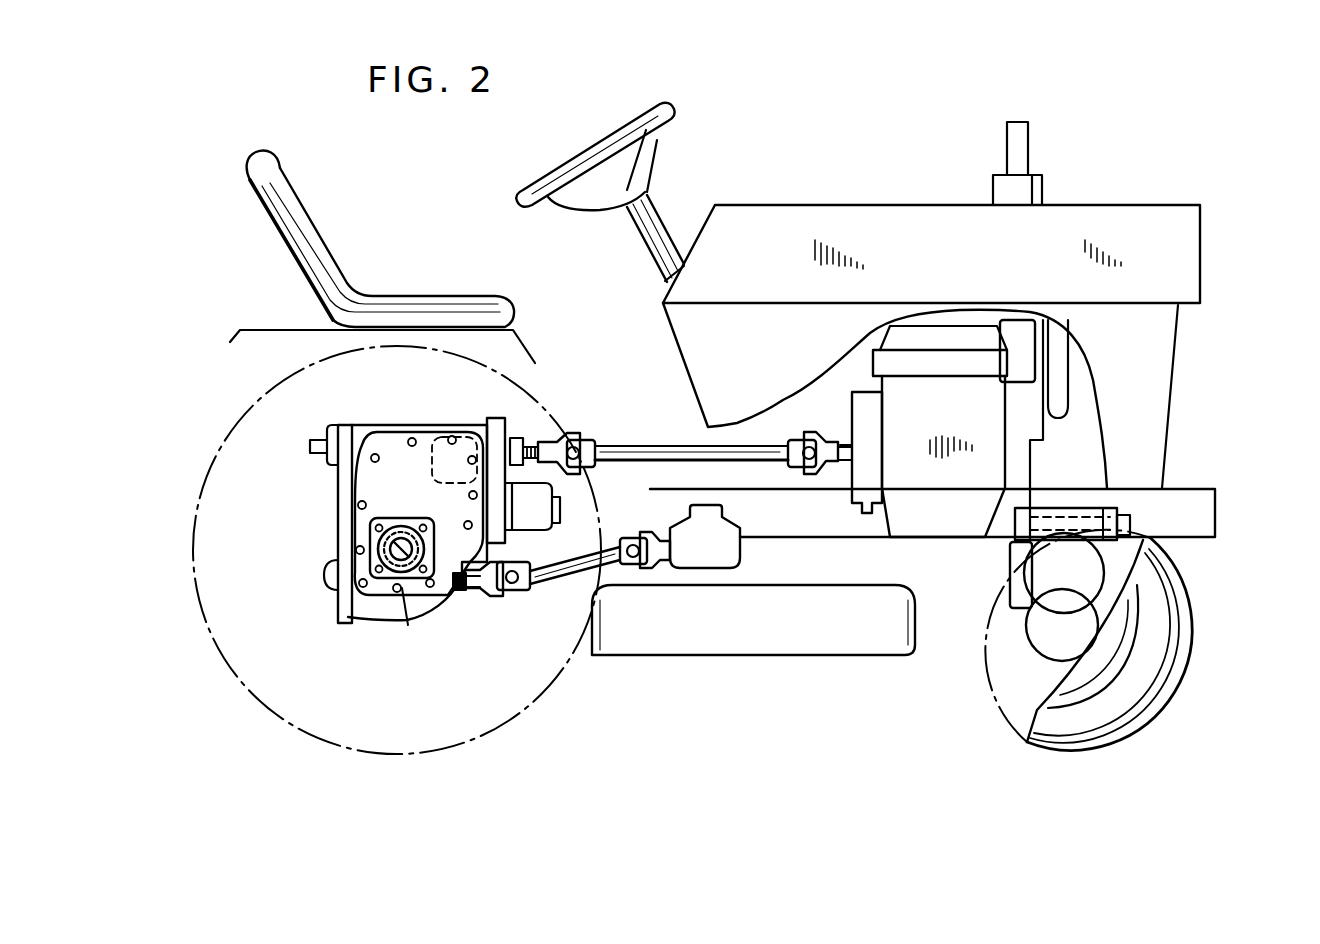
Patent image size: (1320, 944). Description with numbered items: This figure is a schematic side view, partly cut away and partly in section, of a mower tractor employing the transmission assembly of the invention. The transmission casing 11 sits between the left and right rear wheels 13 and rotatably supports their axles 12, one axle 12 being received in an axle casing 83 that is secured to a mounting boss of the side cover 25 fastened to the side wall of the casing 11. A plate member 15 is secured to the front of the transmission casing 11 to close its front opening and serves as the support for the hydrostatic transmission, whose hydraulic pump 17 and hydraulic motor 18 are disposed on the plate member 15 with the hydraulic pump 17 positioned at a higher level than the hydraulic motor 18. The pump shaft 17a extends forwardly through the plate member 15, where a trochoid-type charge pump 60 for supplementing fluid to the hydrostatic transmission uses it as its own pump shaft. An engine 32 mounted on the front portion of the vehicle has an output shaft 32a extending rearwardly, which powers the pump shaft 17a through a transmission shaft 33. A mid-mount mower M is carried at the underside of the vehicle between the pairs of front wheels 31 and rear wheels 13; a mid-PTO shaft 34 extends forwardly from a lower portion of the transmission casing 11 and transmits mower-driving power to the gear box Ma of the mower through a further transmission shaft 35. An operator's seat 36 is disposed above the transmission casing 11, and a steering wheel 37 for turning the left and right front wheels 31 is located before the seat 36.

The transmission casing 11 is at (368, 432).
The axle 12 is at (408, 625).
The rear wheel 13 is at (560, 672).
The plate member 15 is at (503, 418).
The hydraulic pump 17 is at (457, 413).
The pump shaft 17a is at (563, 430).
The hydraulic motor 18 is at (590, 478).
The side cover 25 is at (338, 488).
The front wheel 31 is at (1143, 690).
The engine 32 is at (963, 382).
The engine output shaft 32a is at (838, 430).
The transmission shaft 33 is at (740, 443).
The mid-PTO shaft 34 is at (460, 590).
The transmission shaft 35 is at (570, 568).
The operator's seat 36 is at (335, 280).
The steering wheel 37 is at (663, 103).
The charge pump 60 is at (530, 437).
The axle casing 83 is at (403, 518).
The mid-mount mower M is at (800, 615).
The gear box Ma is at (740, 553).